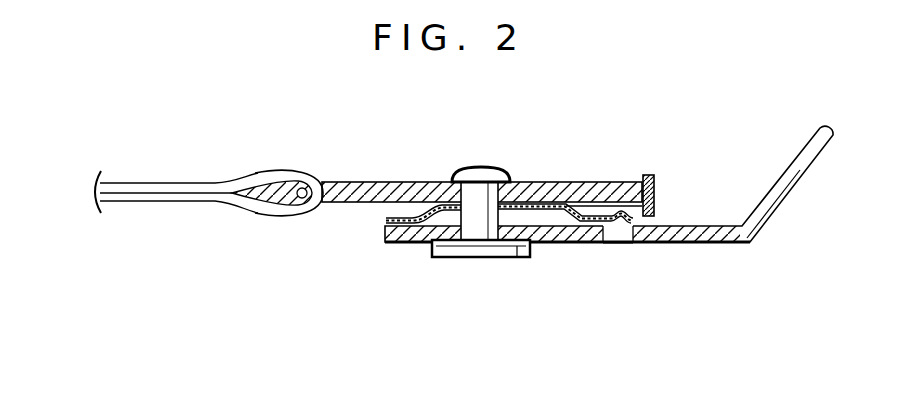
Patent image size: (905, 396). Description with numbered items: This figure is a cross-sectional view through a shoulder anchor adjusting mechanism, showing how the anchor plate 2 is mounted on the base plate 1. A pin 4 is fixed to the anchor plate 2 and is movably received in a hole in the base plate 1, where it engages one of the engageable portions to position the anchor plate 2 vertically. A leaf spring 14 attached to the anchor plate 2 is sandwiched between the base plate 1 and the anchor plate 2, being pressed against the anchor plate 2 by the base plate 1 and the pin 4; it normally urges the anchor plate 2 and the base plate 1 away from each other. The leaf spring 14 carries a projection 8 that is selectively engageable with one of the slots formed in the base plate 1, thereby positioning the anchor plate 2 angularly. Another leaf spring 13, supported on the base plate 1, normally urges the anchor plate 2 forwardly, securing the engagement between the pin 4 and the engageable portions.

The base plate 1 is at (777, 208).
The anchor plate 2 is at (399, 182).
The pin 4 is at (484, 247).
The projection 8 is at (621, 242).
The leaf spring 13 is at (648, 174).
The leaf spring 14 is at (384, 221).